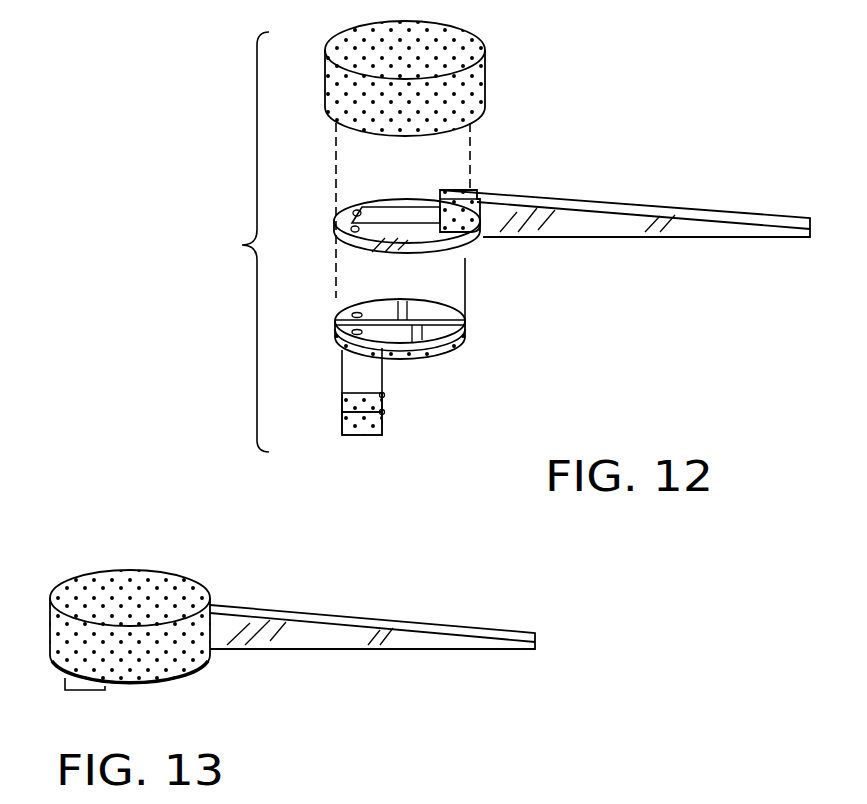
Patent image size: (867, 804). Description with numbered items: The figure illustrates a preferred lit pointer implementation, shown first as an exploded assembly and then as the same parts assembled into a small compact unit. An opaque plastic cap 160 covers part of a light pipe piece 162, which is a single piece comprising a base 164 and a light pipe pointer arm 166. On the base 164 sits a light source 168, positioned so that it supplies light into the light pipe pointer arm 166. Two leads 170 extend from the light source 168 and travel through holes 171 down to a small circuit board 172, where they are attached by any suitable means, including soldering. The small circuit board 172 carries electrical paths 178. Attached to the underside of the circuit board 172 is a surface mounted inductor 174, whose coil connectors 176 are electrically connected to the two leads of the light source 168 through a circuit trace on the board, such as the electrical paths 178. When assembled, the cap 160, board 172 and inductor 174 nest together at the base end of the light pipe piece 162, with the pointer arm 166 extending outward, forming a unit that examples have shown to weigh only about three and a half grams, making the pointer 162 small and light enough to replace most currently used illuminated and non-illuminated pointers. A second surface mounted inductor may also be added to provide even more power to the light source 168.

In FIG. 12, the opaque plastic cap 160 is at (470, 82).
In FIG. 13, the opaque plastic cap 160 is at (100, 582).
In FIG. 12, the light pipe piece 162 is at (606, 198).
In FIG. 13, the light pipe piece 162 is at (343, 612).
In FIG. 12, the base 164 is at (450, 254).
In FIG. 12, the light pipe pointer arm 166 is at (575, 238).
In FIG. 13, the light pipe pointer arm 166 is at (360, 650).
In FIG. 12, the light source 168 is at (462, 190).
In FIG. 12, the leads 170 is at (413, 207).
In FIG. 12, the holes 171 is at (351, 228).
In FIG. 12, the small circuit board 172 is at (380, 300).
In FIG. 13, the small circuit board 172 is at (176, 680).
In FIG. 12, the surface mounted inductor 174 is at (360, 425).
In FIG. 13, the surface mounted inductor 174 is at (82, 690).
In FIG. 12, the coil connectors 176 is at (386, 412).
In FIG. 12, the electrical paths 178 is at (455, 333).